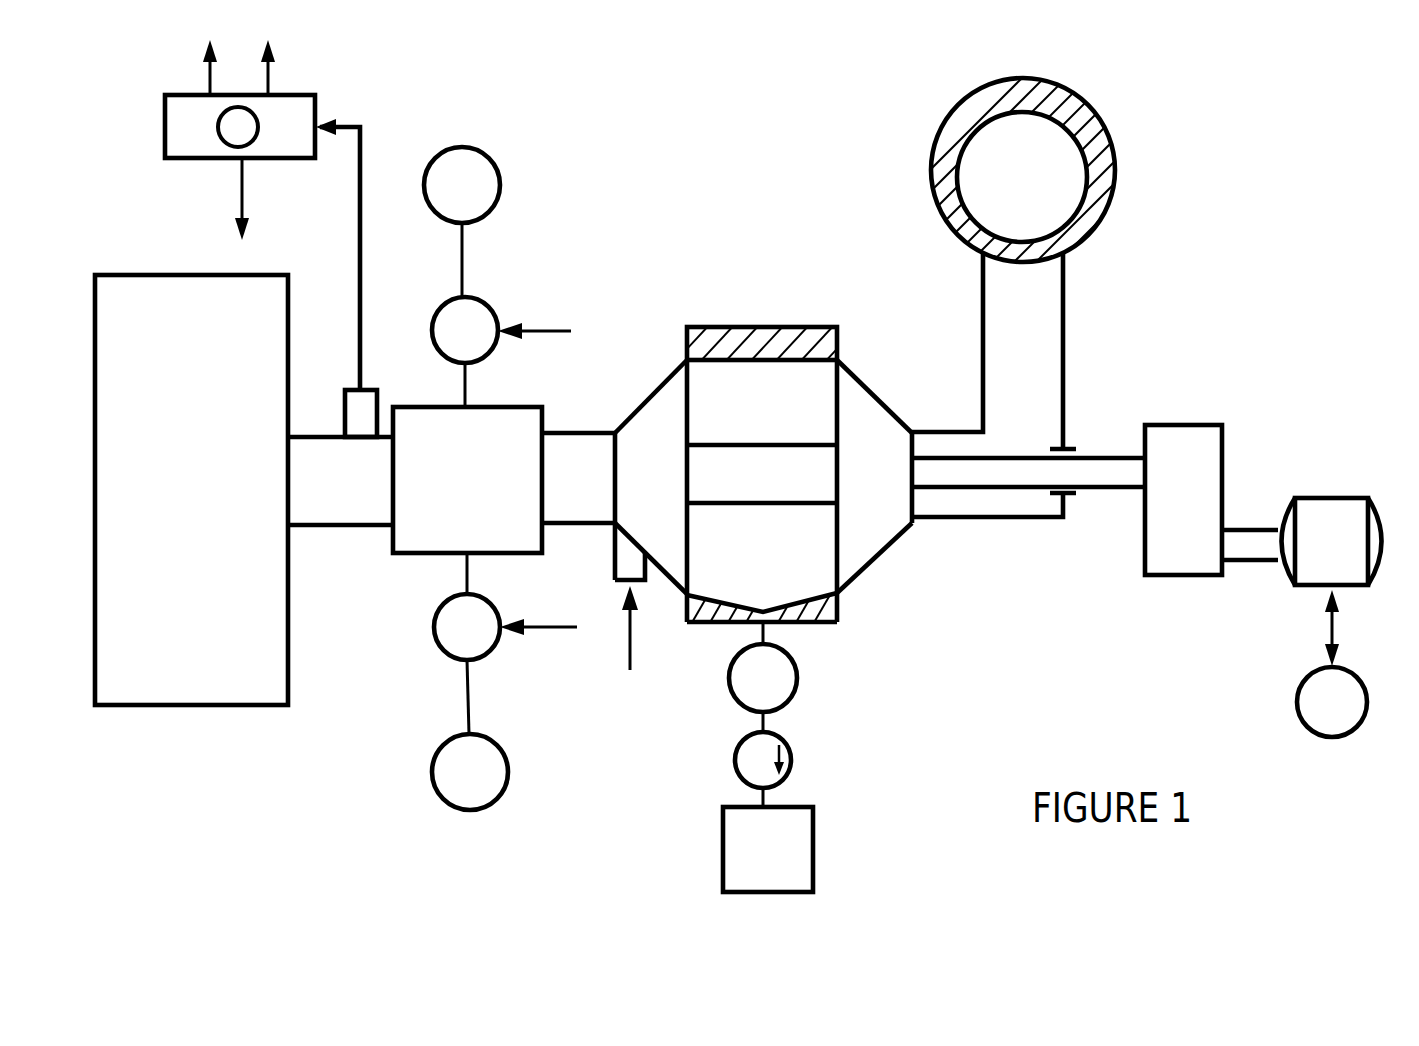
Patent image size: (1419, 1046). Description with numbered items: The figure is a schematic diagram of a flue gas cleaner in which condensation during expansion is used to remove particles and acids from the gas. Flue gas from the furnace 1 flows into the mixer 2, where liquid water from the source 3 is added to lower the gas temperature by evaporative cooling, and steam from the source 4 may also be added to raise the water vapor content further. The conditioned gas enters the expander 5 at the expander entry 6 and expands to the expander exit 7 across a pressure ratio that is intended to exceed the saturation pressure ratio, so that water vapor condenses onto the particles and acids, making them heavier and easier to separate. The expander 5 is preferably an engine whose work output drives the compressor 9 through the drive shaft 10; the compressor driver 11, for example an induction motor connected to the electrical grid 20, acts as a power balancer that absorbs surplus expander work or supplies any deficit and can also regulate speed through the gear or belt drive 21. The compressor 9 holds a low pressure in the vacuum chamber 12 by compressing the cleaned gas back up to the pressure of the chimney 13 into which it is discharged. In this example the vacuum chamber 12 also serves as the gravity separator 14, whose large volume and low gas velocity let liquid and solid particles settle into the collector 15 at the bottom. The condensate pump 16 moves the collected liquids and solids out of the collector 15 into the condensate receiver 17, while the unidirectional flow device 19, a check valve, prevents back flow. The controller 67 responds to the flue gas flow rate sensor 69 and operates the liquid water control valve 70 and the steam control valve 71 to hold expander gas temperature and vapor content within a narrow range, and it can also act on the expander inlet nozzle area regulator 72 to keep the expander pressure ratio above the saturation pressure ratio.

The furnace 1 is at (125, 690).
The mixer 2 is at (400, 545).
The liquid water source 3 is at (468, 168).
The steam source 4 is at (453, 767).
The expander 5 is at (658, 415).
The expander entry 6 is at (613, 453).
The expander exit 7 is at (688, 412).
The compressor 9 is at (860, 423).
The drive shaft 10 is at (725, 473).
The compressor driver 11 is at (1318, 568).
The vacuum chamber 12 is at (773, 558).
The chimney 13 is at (1068, 170).
The gravity separator 14 is at (792, 400).
The collector 15 is at (800, 585).
The condensate pump 16 is at (773, 698).
The condensate receiver 17 is at (792, 828).
The unidirectional flow device 19 is at (737, 763).
The electrical grid 20 is at (1325, 700).
The gear or belt drive 21 is at (1165, 545).
The controller 67 is at (290, 124).
The flue gas flow rate sensor 69 is at (363, 410).
The liquid water control valve 70 is at (462, 312).
The steam control valve 71 is at (450, 635).
The expander inlet nozzle area regulator 72 is at (632, 563).